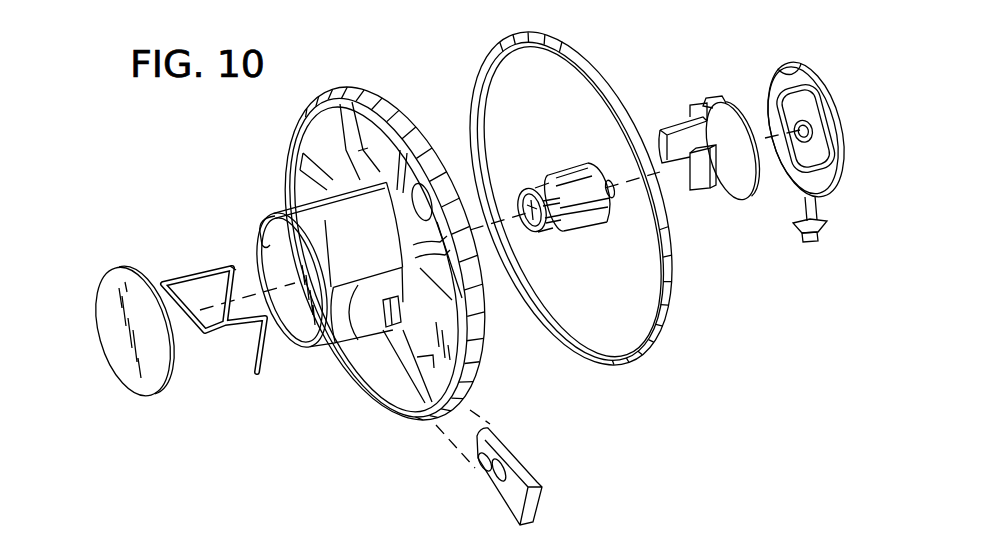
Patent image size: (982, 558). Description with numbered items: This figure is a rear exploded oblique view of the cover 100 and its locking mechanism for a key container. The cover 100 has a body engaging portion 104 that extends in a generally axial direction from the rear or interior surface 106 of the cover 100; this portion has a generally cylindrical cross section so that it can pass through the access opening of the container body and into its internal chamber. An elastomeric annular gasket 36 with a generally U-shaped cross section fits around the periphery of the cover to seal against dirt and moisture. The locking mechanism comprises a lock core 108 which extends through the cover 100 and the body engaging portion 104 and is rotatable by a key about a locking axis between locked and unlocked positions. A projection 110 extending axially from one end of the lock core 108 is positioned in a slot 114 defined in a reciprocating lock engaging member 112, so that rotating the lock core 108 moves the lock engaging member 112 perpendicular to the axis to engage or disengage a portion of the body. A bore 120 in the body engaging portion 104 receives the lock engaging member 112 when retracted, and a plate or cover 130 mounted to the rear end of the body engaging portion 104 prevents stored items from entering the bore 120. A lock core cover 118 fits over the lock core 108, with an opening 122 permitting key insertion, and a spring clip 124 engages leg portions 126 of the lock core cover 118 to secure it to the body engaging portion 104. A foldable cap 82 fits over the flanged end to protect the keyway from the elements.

The elastomeric annular gasket 36 is at (668, 318).
The foldable cap 82 is at (838, 190).
The cover 100 is at (622, 440).
The body engaging portion 104 is at (313, 360).
The rear or interior surface 106 is at (378, 392).
The lock core 108 is at (592, 243).
The projection 110 is at (532, 235).
The lock engaging member 112 is at (527, 457).
The slot 114 is at (487, 488).
The lock core cover 118 is at (745, 92).
The bore 120 is at (266, 228).
The opening 122 is at (722, 100).
The spring clip 124 is at (223, 330).
The leg portions 126 is at (673, 127).
The plate or cover 130 is at (152, 397).